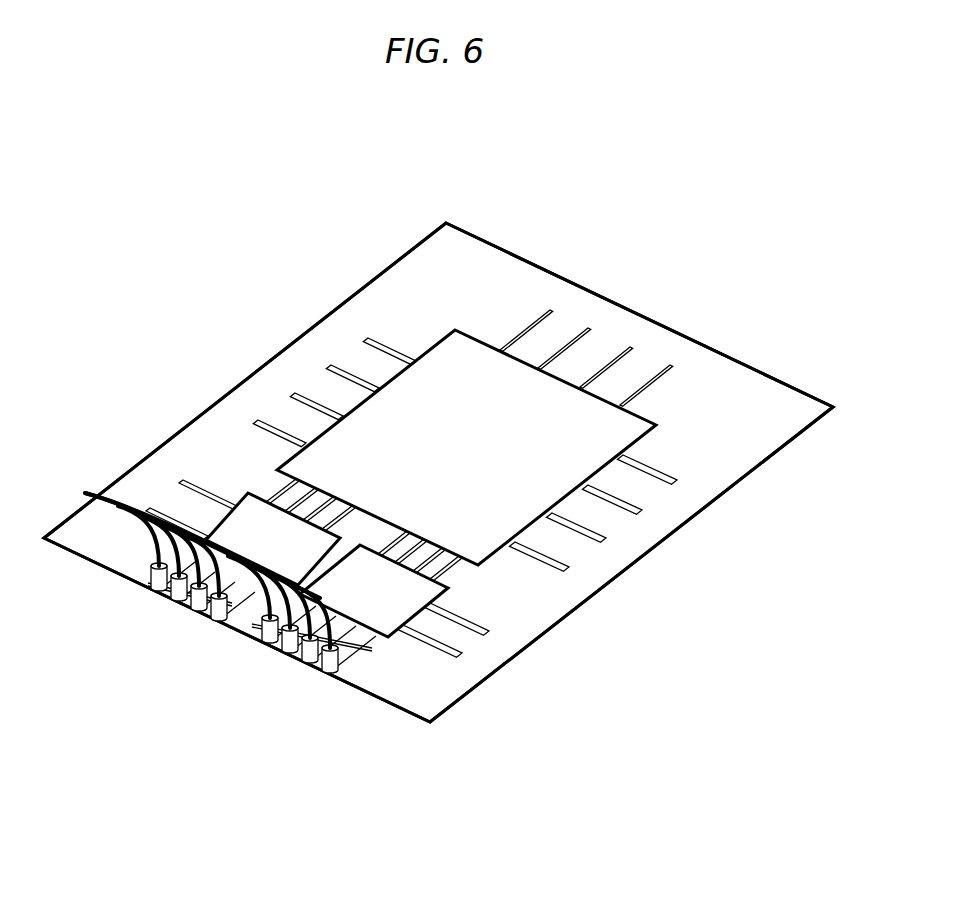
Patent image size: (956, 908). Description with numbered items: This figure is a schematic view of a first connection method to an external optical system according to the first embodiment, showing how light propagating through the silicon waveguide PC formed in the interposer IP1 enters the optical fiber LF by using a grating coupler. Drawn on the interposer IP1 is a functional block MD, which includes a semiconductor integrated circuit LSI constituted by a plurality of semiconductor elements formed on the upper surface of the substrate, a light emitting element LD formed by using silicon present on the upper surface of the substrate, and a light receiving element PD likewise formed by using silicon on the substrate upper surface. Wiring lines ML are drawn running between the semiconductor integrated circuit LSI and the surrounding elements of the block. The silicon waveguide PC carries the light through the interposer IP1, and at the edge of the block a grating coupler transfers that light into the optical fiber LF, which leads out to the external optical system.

The functional block MD is at (491, 246).
The interposer IP1 is at (628, 328).
The semiconductor integrated circuit LSI is at (473, 350).
The metal wiring lines ML is at (383, 342).
The light receiving element PD is at (247, 505).
The light emitting element LD is at (403, 612).
The silicon waveguide PC is at (357, 647).
The optical fiber LF is at (123, 497).